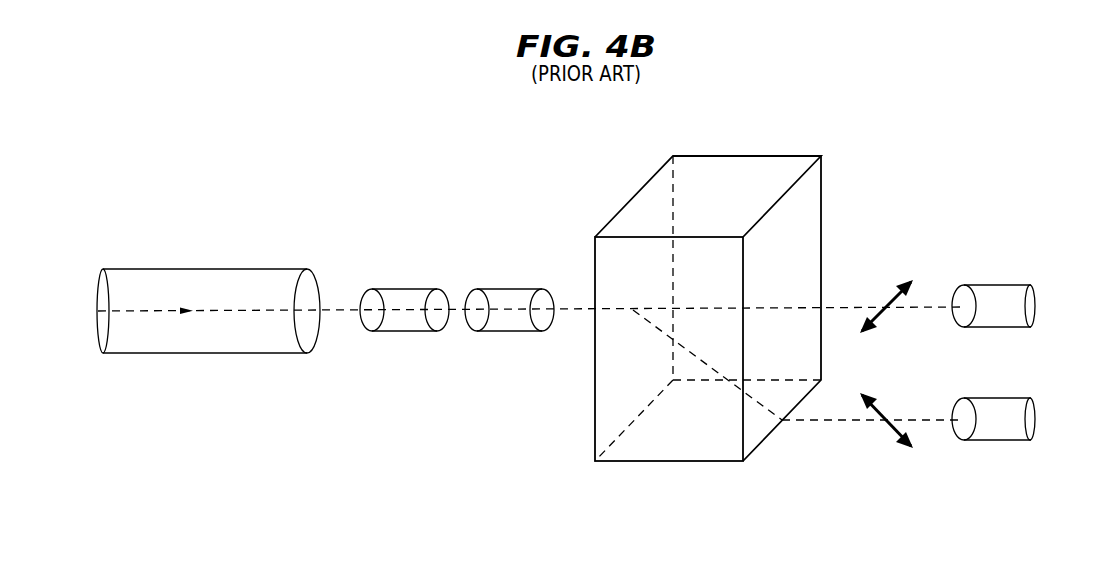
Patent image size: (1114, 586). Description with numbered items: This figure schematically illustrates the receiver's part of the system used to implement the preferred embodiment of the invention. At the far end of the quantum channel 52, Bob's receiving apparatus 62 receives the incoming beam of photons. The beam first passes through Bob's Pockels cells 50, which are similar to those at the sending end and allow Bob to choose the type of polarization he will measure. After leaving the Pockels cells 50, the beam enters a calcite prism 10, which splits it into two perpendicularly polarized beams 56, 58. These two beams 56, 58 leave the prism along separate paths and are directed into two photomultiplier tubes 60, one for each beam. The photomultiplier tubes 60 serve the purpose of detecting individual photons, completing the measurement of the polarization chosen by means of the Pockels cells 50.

The calcite prism 10 is at (822, 213).
The Pockels cells 50 is at (511, 289).
The quantum channel 52 is at (216, 269).
The perpendicularly polarized beam 56 is at (845, 306).
The perpendicularly polarized beam 58 is at (847, 420).
The photomultiplier tubes 60 is at (1010, 285).
The receiving apparatus 62 is at (352, 204).